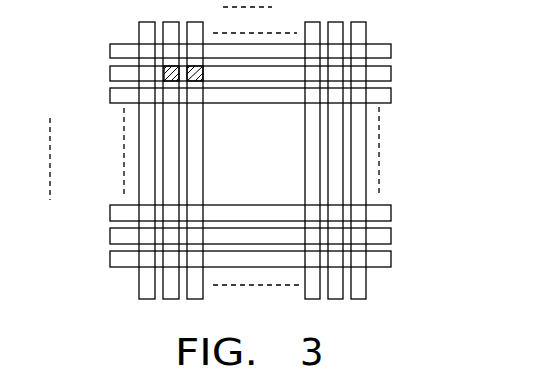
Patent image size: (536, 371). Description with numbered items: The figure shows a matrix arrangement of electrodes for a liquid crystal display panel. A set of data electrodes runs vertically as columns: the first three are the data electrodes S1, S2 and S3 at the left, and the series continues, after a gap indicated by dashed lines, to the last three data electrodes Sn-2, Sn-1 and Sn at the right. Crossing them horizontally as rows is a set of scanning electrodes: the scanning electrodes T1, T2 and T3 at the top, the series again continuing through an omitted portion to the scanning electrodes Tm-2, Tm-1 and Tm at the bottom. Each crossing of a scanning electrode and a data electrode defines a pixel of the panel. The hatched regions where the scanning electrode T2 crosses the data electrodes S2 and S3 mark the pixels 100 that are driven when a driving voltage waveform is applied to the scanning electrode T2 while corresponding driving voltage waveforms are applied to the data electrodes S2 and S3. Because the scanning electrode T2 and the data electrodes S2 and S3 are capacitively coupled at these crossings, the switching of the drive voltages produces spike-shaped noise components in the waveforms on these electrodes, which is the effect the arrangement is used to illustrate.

The pixel 100 is at (226, 0).
The data electrode S1 is at (149, 149).
The data electrode S2 is at (168, 149).
The data electrode S3 is at (195, 149).
The data electrode Sn-2 is at (299, 149).
The data electrode Sn-1 is at (344, 149).
The data electrode Sn is at (368, 149).
The scanning electrode T1 is at (216, 55).
The scanning electrode T2 is at (216, 78).
The scanning electrode T3 is at (216, 102).
The scanning electrode Tm-2 is at (216, 215).
The scanning electrode Tm-1 is at (216, 238).
The scanning electrode Tm is at (216, 261).